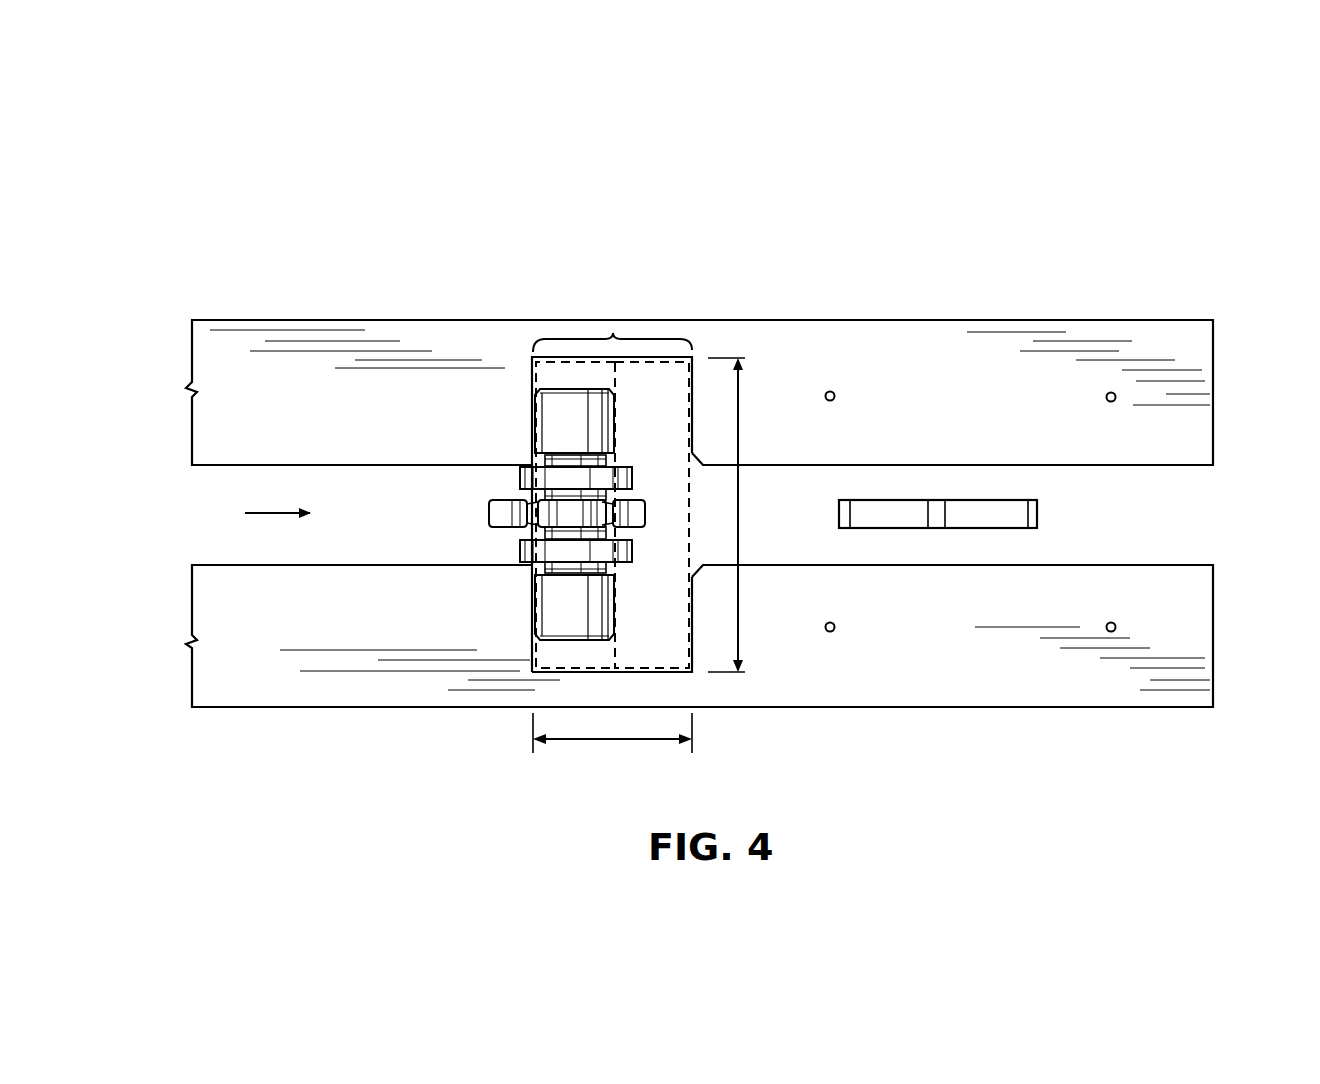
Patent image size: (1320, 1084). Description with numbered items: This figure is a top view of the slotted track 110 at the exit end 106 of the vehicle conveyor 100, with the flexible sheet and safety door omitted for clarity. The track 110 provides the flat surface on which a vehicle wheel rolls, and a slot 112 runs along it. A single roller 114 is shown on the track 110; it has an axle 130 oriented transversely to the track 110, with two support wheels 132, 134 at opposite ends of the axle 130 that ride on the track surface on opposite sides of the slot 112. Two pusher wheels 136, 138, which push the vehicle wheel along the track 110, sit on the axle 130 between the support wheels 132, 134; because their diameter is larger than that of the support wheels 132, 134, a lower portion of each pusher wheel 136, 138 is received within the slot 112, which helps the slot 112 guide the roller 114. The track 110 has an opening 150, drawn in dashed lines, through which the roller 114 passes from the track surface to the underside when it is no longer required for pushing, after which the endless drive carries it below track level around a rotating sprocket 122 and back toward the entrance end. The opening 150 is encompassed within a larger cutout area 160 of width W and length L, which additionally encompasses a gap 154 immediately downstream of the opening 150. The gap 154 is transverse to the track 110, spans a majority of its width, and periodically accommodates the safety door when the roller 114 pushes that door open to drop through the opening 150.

The vehicle conveyor 100 is at (283, 203).
The exit end 106 is at (1258, 334).
The slotted track 110 is at (205, 420).
The slot 112 is at (250, 514).
The roller 114 is at (503, 517).
The rotating sprocket 122 is at (885, 518).
The axle 130 is at (577, 528).
The support wheel 132 is at (546, 413).
The support wheel 134 is at (545, 607).
The pusher wheel 136 is at (522, 478).
The pusher wheel 138 is at (575, 552).
The opening 150 is at (570, 372).
The gap 154 is at (667, 385).
The cutout area 160 is at (613, 338).